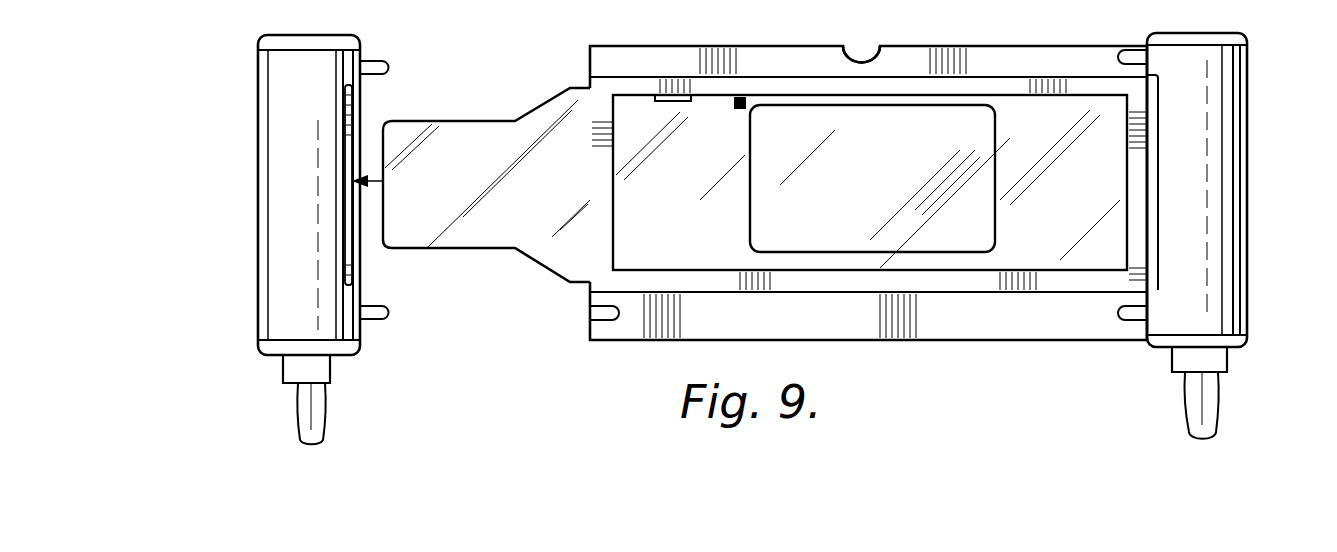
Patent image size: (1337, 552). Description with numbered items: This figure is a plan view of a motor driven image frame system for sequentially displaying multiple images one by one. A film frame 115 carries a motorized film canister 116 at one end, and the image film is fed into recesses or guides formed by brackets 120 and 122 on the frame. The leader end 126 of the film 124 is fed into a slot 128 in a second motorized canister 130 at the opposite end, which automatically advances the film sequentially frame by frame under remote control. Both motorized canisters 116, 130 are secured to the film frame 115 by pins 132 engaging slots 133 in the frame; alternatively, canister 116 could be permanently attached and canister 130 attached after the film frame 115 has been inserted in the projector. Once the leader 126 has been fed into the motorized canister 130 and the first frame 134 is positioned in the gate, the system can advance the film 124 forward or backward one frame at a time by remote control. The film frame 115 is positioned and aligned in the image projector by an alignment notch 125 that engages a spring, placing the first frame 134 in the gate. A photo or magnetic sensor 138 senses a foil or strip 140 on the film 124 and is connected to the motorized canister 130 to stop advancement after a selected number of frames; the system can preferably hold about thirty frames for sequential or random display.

The film frame 115 is at (1010, 46).
The motorized film canister 116 is at (1250, 144).
The bracket 120 is at (908, 76).
The bracket 122 is at (968, 285).
The film 124 is at (506, 250).
The alignment notch 125 is at (856, 50).
The leader end 126 is at (478, 118).
The slot 128 is at (355, 268).
The second motorized canister 130 is at (260, 218).
The pin 132 is at (1132, 326).
The slot 133 is at (590, 313).
The first frame 134 is at (873, 201).
The sensor 138 is at (658, 96).
The foil or strip 140 is at (743, 96).